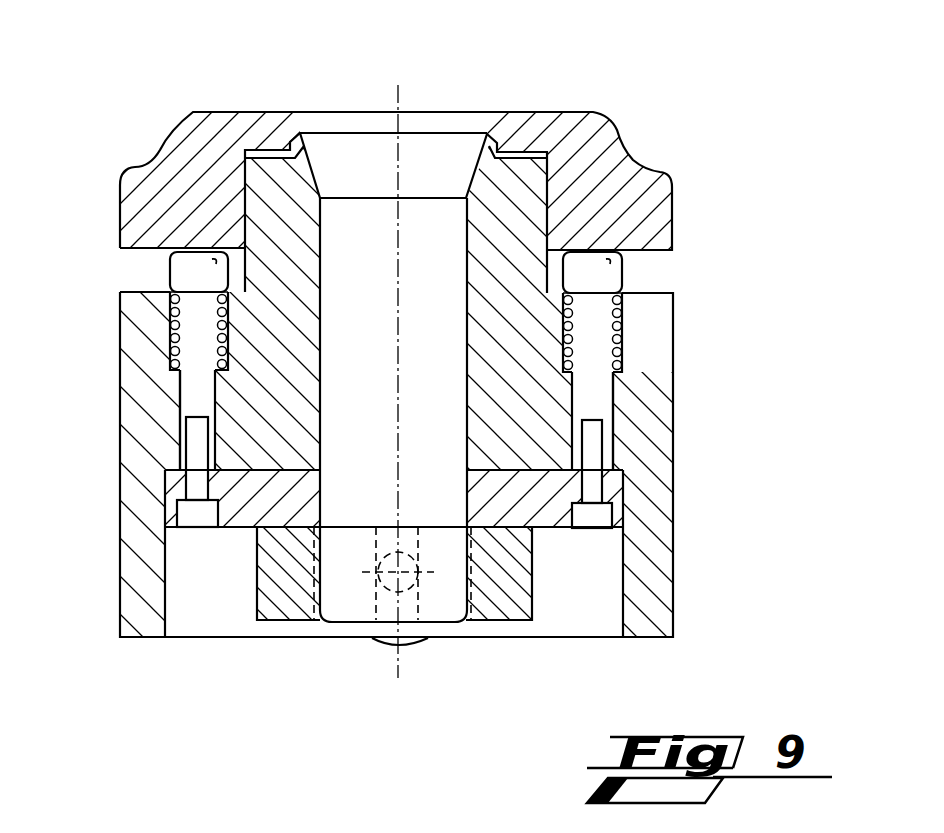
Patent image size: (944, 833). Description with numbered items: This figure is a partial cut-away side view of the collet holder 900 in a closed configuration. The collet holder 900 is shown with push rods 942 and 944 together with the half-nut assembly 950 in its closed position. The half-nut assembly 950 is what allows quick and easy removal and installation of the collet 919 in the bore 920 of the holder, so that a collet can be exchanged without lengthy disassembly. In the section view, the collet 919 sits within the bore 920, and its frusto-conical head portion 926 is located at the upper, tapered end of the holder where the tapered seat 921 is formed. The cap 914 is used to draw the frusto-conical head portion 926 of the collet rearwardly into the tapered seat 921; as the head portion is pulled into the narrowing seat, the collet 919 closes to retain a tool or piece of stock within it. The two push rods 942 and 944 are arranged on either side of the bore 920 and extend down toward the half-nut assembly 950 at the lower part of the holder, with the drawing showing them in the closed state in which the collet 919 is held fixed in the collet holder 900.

The collet holder 900 is at (873, 73).
The cap 914 is at (676, 200).
The collet 919 is at (444, 110).
The bore 920 is at (331, 203).
The tapered seat 921 is at (602, 113).
The frusto-conical head portion 926 is at (493, 138).
The push rod 942 is at (147, 270).
The push rod 944 is at (627, 277).
The half-nut assembly 950 is at (545, 603).